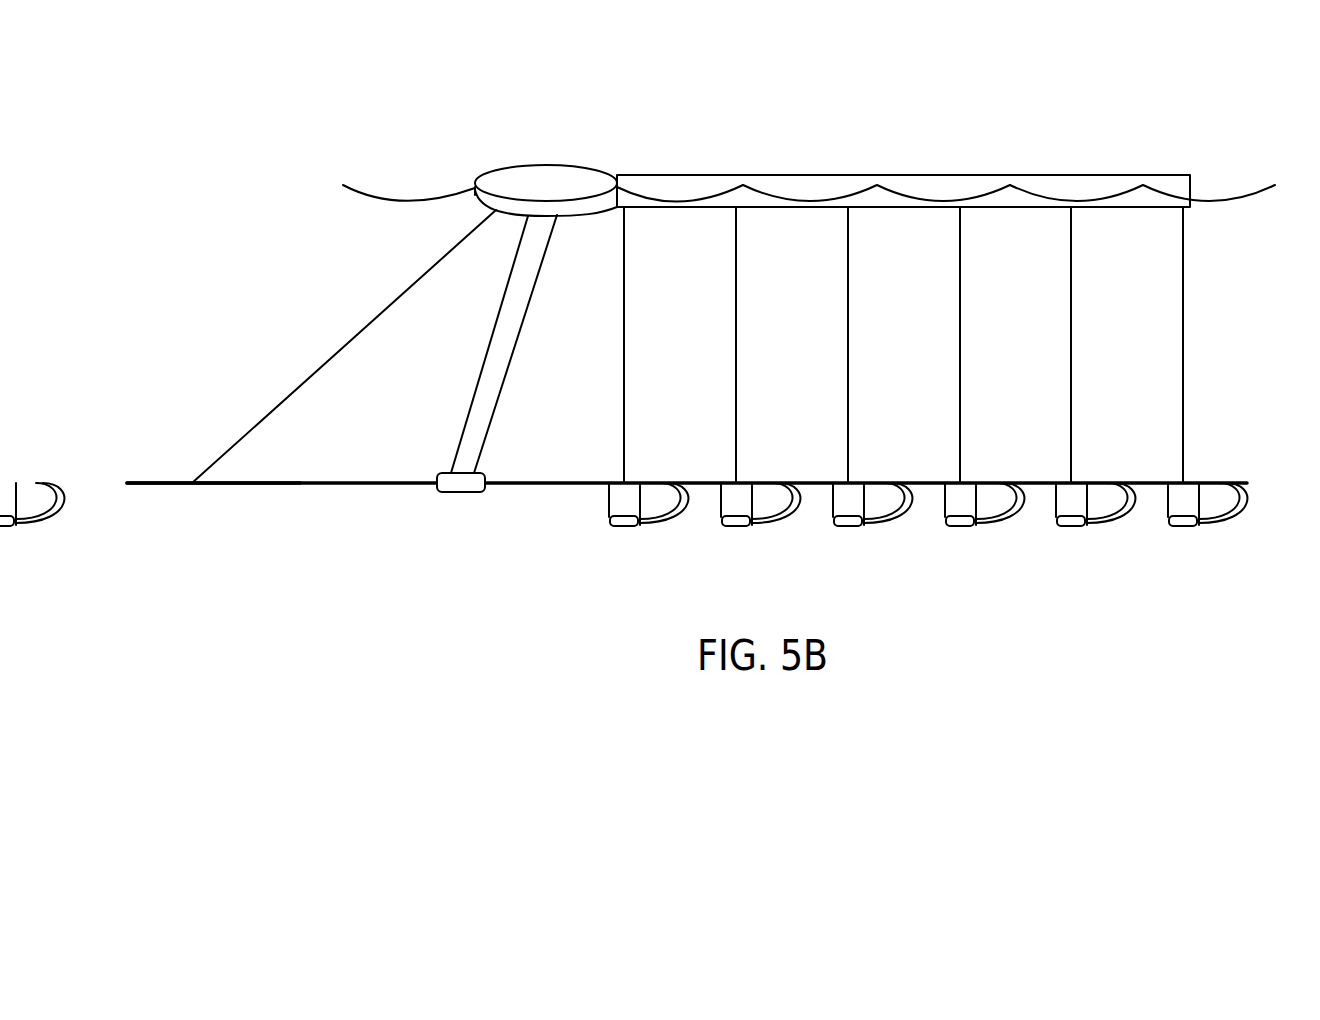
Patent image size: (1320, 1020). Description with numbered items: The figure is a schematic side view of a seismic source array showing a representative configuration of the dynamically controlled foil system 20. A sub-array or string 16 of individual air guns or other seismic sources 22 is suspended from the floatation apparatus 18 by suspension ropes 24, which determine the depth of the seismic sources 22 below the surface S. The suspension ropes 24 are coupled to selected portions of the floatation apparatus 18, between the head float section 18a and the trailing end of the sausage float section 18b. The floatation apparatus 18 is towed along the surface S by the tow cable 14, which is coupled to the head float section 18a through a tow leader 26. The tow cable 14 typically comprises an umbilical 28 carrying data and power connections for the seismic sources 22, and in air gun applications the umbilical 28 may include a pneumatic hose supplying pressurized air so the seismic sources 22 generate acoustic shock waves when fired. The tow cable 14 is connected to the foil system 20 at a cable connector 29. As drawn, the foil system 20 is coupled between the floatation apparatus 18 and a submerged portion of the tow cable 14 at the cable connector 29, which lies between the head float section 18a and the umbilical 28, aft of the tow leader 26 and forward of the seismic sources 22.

The tow cable 14 is at (156, 483).
The sub-array or string 16 is at (268, 230).
The floatation apparatus 18 is at (832, 143).
The head float section 18a is at (556, 166).
The sausage float section 18b is at (947, 175).
The dynamically controlled foil system 20 is at (478, 416).
The seismic sources 22 is at (0, 527).
The suspension ropes 24 is at (958, 328).
The tow leader 26 is at (314, 372).
The umbilical 28 is at (287, 488).
The cable connector 29 is at (450, 493).
The surface S is at (412, 200).